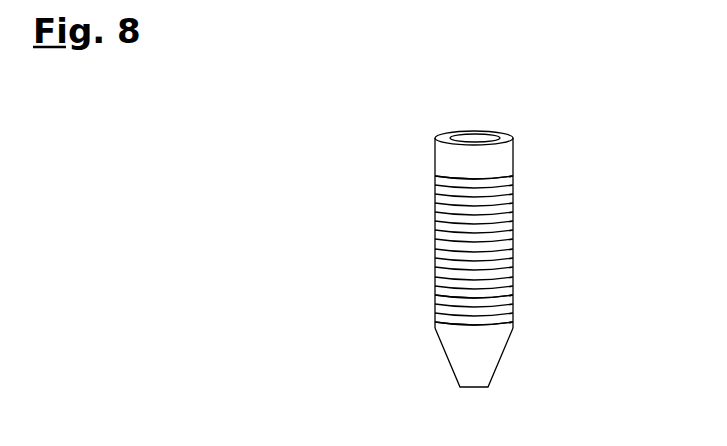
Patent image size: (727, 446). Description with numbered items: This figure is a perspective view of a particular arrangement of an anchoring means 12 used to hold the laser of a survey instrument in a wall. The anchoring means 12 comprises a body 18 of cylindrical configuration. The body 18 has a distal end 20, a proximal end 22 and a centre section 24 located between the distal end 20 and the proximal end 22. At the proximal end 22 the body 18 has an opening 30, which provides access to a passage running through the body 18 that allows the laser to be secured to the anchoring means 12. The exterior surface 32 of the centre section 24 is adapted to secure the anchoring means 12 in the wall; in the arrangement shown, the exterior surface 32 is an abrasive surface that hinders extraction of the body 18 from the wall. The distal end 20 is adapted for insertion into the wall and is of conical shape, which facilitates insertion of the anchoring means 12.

The anchoring means 12 is at (544, 175).
The body 18 is at (543, 238).
The distal end 20 is at (416, 327).
The proximal end 22 is at (422, 163).
The centre section 24 is at (409, 248).
The opening 30 is at (474, 138).
The exterior surface 32 is at (483, 300).